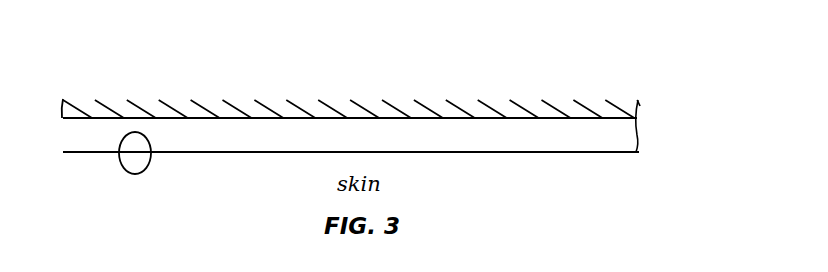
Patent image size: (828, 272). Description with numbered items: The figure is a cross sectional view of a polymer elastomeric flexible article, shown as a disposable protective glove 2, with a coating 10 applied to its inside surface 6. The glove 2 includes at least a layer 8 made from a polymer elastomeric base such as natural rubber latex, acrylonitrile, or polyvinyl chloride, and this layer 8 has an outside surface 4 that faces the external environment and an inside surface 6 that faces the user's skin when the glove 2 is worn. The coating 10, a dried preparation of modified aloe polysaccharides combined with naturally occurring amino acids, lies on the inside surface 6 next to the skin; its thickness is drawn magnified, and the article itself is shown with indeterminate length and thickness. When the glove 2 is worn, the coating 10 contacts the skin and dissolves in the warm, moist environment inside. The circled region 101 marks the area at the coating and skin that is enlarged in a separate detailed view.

The glove 2 is at (520, 64).
The outside surface 4 is at (62, 50).
The inside surface 6 is at (62, 118).
The layer 8 is at (203, 104).
The coating 10 is at (636, 143).
The detail area 101 is at (146, 169).